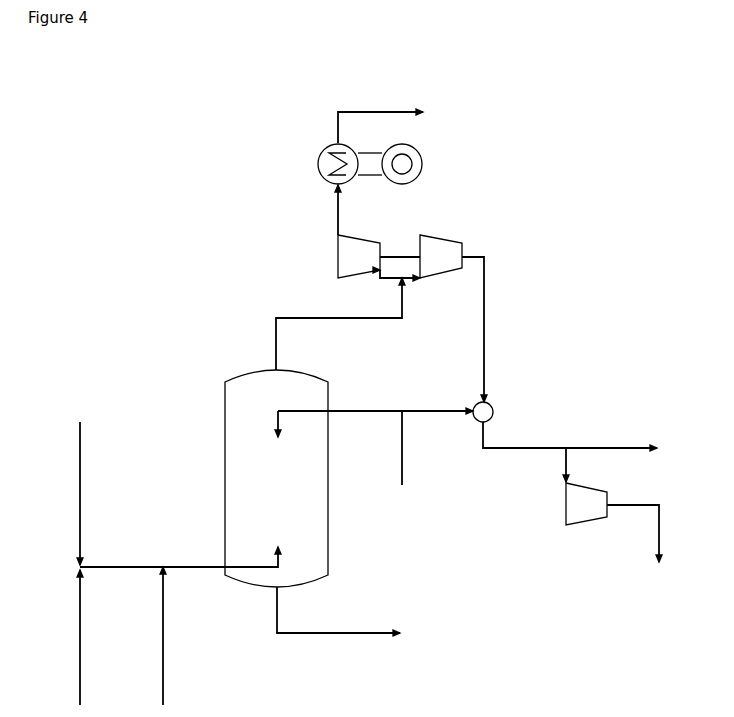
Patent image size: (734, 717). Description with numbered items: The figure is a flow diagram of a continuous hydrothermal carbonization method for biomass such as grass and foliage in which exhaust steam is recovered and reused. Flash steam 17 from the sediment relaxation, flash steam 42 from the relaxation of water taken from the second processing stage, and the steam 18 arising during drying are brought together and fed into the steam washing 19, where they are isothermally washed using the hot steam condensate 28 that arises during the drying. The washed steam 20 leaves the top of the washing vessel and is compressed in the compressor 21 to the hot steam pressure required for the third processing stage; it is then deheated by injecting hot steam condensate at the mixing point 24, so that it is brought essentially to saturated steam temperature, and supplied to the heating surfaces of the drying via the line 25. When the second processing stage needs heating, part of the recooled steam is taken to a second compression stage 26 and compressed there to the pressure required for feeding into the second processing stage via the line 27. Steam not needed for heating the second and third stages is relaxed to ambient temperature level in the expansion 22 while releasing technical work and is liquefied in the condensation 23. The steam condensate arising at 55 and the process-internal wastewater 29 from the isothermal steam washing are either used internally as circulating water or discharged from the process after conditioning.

The steam condensate 55 is at (382, 112).
The condensation 23 is at (318, 164).
The expansion 22 is at (354, 258).
The compressor 21 is at (442, 238).
The washed steam 20 is at (276, 338).
The steam washing 19 is at (225, 412).
The deheating by injecting hot steam condensate 24 is at (493, 412).
The supply to the heating surfaces of the drying 25 is at (617, 448).
The hot steam condensate 28 is at (402, 448).
The second compression stage 26 is at (587, 525).
The feed into the second processing stage 27 is at (659, 530).
The process-internal wastewater 29 is at (328, 633).
The flash steam 17 is at (80, 483).
The steam arising during the drying 18 is at (80, 658).
The flash steam 42 is at (163, 658).